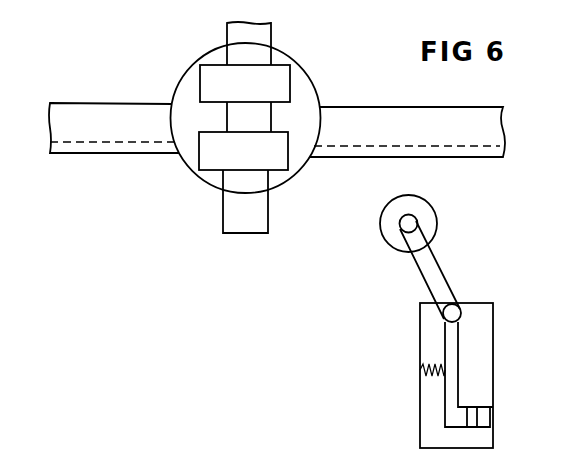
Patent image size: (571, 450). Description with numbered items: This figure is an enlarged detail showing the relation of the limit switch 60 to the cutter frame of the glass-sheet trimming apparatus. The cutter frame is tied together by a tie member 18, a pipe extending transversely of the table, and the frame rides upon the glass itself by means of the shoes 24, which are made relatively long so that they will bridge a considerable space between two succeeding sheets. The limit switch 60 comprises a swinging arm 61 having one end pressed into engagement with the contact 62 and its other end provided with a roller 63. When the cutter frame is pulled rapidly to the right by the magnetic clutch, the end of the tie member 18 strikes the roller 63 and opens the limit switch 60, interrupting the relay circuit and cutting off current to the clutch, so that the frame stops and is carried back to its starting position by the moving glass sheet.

The tie member 18 is at (225, 211).
The shoes 24 is at (92, 135).
The limit switch 60 is at (424, 332).
The swinging arm 61 is at (427, 273).
The contact 62 is at (483, 416).
The roller 63 is at (430, 216).